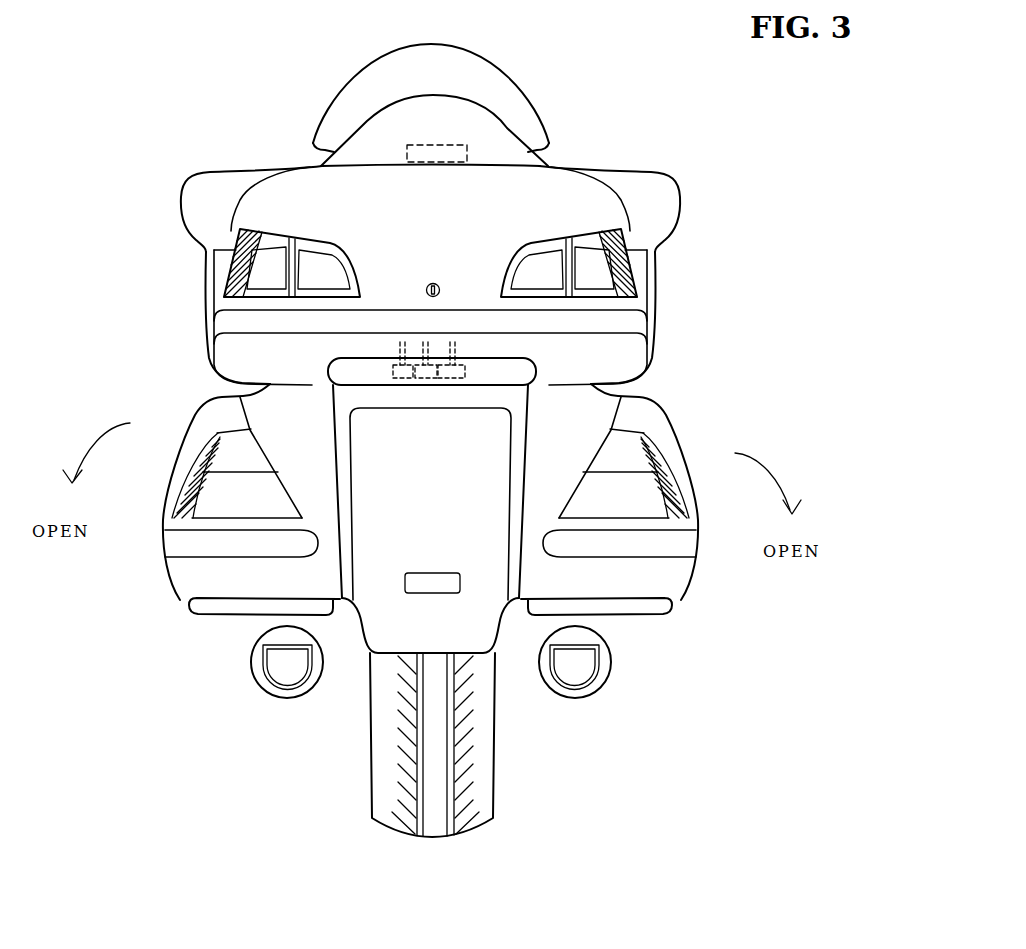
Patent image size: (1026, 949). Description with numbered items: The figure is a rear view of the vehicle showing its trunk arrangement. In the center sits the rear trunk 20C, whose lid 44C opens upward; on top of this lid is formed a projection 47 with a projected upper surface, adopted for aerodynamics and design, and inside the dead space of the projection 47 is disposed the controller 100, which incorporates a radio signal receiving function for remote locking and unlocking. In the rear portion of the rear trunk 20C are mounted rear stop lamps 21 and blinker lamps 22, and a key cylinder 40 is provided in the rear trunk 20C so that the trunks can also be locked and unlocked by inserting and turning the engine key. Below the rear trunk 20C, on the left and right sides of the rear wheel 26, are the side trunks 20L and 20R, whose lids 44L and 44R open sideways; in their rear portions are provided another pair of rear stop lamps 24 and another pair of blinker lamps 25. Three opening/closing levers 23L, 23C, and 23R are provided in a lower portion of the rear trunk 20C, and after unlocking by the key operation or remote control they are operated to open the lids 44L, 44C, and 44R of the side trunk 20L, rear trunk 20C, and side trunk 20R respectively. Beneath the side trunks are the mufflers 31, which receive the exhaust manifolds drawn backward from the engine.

The rear trunk 20C is at (609, 178).
The left side trunk 20L is at (183, 414).
The right side trunk 20R is at (682, 424).
The rear stop lamps 21 is at (323, 265).
The blinker lamps 22 is at (253, 279).
The opening/closing lever 23L is at (403, 383).
The opening/closing lever 23C is at (427, 383).
The opening/closing lever 23R is at (453, 383).
The rear stop lamps 24 is at (210, 490).
The blinker lamps 25 is at (227, 452).
The rear wheel 26 is at (490, 810).
The mufflers 31 is at (252, 667).
The key cylinder 40 is at (441, 289).
The lid 44C is at (457, 214).
The lid 44L is at (233, 426).
The lid 44R is at (658, 426).
The projection 47 is at (368, 125).
The controller 100 is at (448, 138).